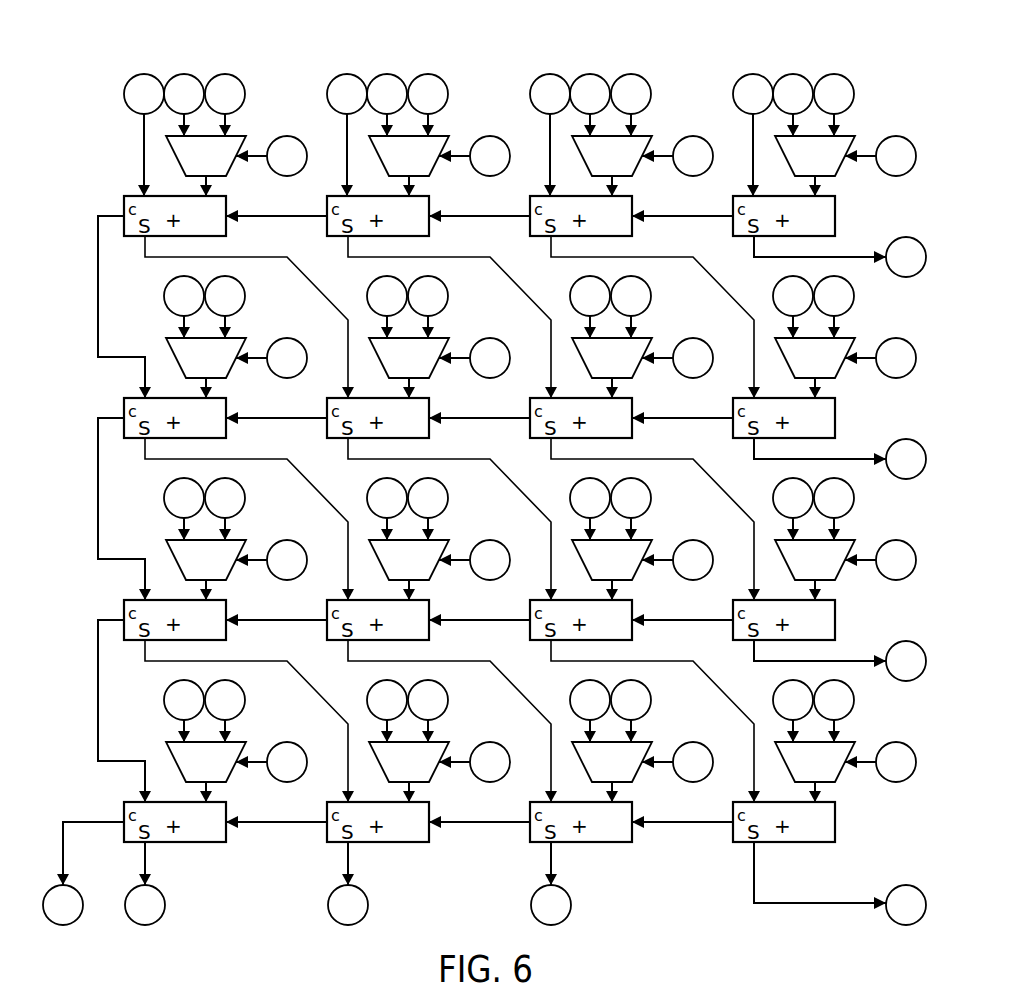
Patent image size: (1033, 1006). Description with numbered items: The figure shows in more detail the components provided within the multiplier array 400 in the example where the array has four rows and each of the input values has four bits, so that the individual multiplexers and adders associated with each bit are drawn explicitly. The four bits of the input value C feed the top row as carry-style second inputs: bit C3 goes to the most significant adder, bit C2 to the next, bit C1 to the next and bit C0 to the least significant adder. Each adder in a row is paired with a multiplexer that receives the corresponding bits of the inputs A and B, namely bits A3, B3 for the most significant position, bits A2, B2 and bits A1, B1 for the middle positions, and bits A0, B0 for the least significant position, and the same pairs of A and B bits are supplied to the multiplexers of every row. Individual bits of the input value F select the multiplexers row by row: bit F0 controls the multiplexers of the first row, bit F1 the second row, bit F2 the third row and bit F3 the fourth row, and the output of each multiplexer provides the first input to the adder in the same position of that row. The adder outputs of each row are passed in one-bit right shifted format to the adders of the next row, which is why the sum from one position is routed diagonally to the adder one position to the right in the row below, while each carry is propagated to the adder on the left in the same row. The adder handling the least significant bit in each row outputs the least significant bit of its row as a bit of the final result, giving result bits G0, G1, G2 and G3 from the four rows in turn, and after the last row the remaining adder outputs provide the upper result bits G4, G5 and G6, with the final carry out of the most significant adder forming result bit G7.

The multiplier array 400 is at (885, 88).
The carry input C3 is at (144, 94).
The carry input C2 is at (347, 94).
The carry input C1 is at (550, 94).
The carry input C0 is at (753, 94).
The operand input A3 is at (184, 397).
The operand input B3 is at (225, 397).
The operand input A2 is at (387, 397).
The operand input B2 is at (428, 397).
The operand input A1 is at (590, 397).
The operand input B1 is at (631, 397).
The operand input A0 is at (793, 397).
The operand input B0 is at (834, 397).
The multiplexer select F0 is at (591, 156).
The multiplexer select F1 is at (591, 358).
The multiplexer select F2 is at (591, 560).
The multiplexer select F3 is at (591, 762).
The output G0 is at (906, 257).
The output G1 is at (906, 459).
The output G2 is at (906, 661).
The output G3 is at (906, 905).
The output G4 is at (551, 905).
The output G5 is at (348, 905).
The output G6 is at (145, 905).
The output G7 is at (63, 905).